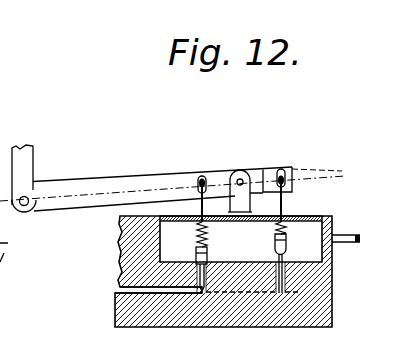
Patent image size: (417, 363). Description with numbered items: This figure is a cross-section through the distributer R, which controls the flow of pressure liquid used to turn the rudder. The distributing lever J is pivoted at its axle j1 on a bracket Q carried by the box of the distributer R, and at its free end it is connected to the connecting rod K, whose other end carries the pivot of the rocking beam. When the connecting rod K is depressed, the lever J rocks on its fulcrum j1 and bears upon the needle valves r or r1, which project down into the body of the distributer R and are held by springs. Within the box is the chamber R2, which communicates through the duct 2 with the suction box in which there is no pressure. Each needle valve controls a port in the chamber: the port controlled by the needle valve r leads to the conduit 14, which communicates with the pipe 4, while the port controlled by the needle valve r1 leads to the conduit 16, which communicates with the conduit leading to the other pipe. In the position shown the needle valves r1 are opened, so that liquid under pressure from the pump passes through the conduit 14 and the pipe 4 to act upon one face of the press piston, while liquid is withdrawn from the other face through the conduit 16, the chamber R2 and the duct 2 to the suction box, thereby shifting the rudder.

The connecting rod K is at (26, 157).
The distributing lever J is at (134, 185).
The pivot axle j1 is at (242, 177).
The bracket Q is at (249, 201).
The distributer R is at (303, 312).
The second chamber R2 is at (307, 230).
The duct 2 is at (349, 244).
The needle valve r is at (195, 253).
The needle valve r1 is at (275, 245).
The pipe 4 is at (119, 290).
The conduit 14 is at (158, 293).
The conduit 16 is at (255, 293).